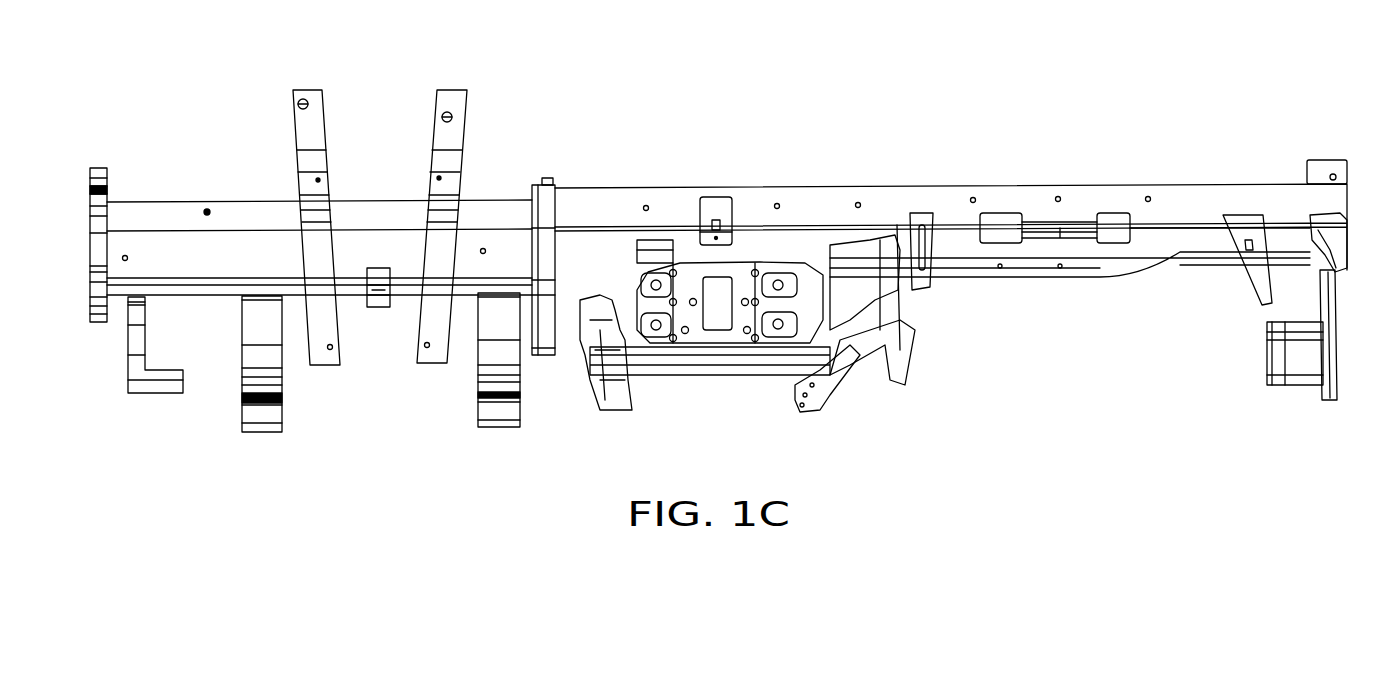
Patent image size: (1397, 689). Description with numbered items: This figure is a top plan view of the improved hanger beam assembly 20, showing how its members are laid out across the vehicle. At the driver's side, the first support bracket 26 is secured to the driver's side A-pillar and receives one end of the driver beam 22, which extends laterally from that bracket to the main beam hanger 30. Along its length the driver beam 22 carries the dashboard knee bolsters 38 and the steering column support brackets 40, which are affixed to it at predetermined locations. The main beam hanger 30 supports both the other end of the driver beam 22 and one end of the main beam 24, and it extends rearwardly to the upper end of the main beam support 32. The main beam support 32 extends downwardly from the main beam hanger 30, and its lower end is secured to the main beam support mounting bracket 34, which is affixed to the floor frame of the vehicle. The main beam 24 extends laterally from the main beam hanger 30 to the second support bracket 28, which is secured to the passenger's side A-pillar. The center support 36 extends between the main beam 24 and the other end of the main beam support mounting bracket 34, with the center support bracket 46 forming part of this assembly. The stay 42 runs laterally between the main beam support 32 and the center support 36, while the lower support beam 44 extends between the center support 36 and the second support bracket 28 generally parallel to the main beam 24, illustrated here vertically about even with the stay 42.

The hanger beam assembly 20 is at (726, 61).
The driver beam 22 is at (256, 202).
The main beam 24 is at (868, 185).
The first support bracket 26 is at (98, 168).
The second support bracket 28 is at (1355, 237).
The main beam hanger 30 is at (550, 180).
The main beam support 32 is at (540, 357).
The main beam support mounting bracket 34 is at (737, 263).
The center support 36 is at (900, 323).
The dashboard knee bolsters 38 is at (262, 432).
The steering column support brackets 40 is at (312, 88).
The stay 42 is at (705, 375).
The lower support beam 44 is at (1038, 277).
The center support bracket 46 is at (935, 215).